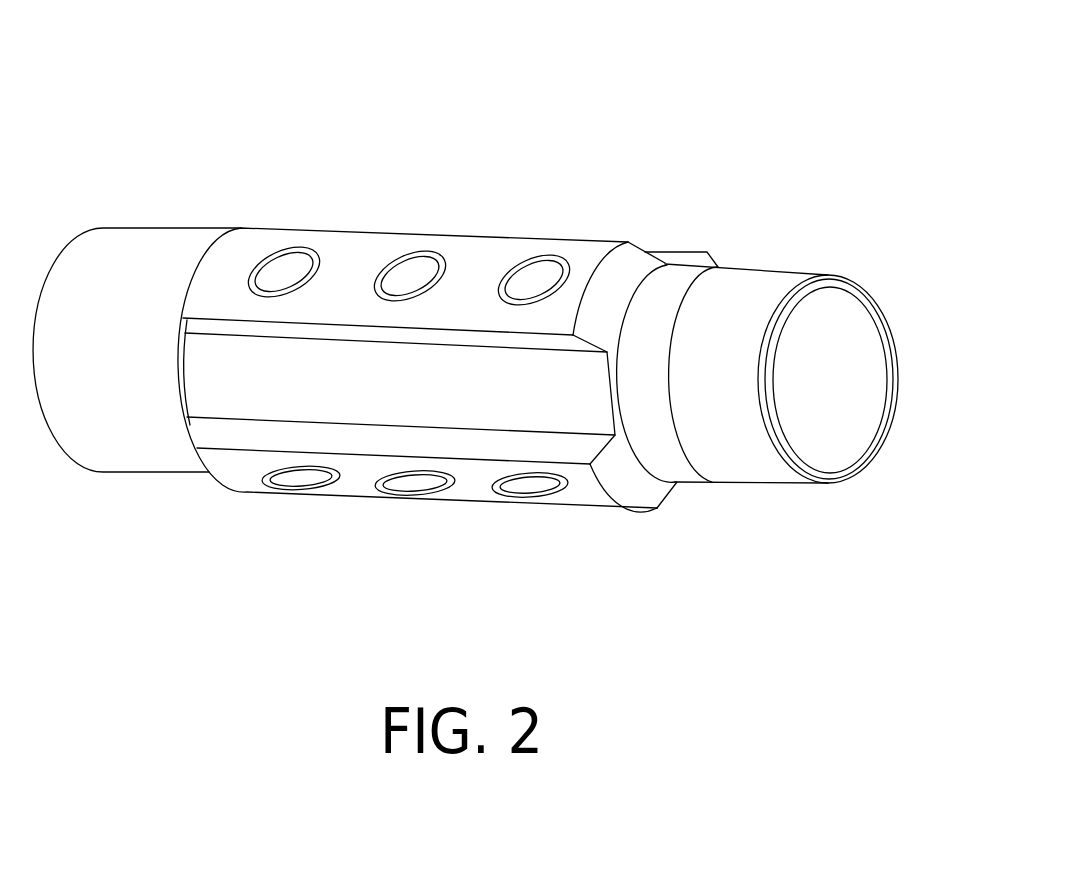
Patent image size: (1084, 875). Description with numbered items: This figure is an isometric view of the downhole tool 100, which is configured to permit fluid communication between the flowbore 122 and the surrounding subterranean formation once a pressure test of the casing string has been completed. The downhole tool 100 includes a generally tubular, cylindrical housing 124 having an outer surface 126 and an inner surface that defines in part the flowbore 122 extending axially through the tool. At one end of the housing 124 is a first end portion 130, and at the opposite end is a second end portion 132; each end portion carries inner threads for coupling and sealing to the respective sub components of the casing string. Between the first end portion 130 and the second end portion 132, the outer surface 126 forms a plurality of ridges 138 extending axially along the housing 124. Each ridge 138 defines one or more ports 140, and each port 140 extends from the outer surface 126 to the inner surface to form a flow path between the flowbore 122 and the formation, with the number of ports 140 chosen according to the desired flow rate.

The downhole tool 100 is at (669, 93).
The flowbore 122 is at (868, 361).
The housing 124 is at (578, 413).
The outer surface 126 is at (215, 407).
The first end portion 130 is at (150, 216).
The second end portion 132 is at (815, 256).
The ridge 138 is at (483, 245).
The port 140 is at (313, 255).